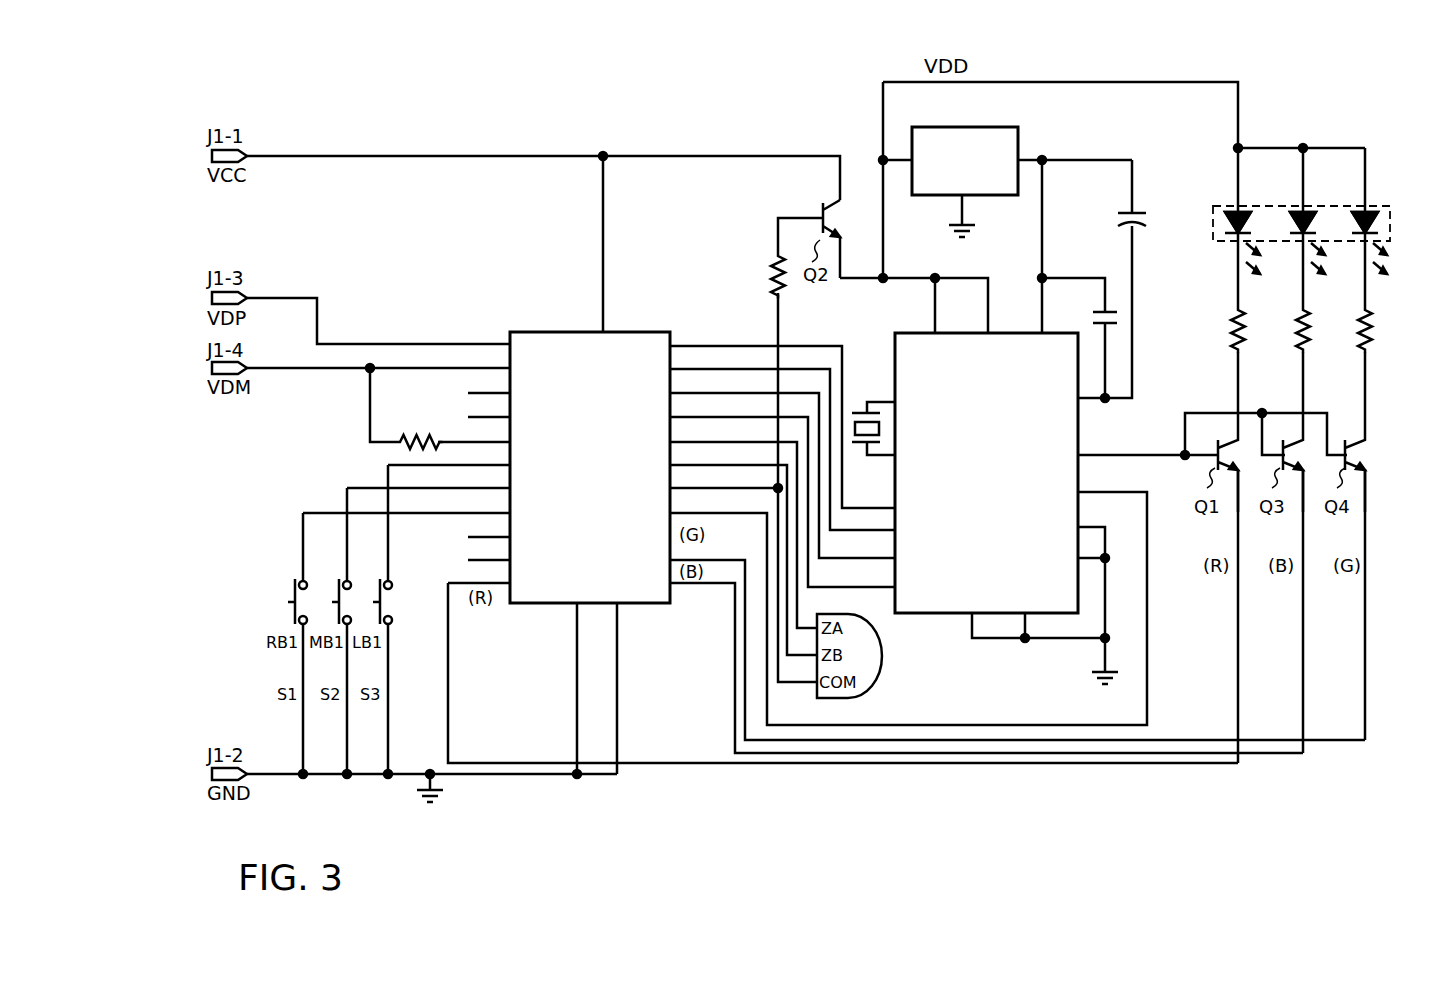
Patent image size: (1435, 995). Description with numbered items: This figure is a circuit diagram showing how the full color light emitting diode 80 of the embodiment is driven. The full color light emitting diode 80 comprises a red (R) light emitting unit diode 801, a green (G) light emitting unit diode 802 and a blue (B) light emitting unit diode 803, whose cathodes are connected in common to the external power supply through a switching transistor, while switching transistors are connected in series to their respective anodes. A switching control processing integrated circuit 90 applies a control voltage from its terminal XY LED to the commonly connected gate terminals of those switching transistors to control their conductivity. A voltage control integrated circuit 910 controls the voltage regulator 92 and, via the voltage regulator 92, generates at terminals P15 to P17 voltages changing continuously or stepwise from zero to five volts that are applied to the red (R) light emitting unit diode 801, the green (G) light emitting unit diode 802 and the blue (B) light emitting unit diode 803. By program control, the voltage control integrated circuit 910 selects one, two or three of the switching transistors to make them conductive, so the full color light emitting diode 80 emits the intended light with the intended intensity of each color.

The voltage control integrated circuit 910 is at (569, 330).
The voltage regulator 92 is at (1021, 131).
The switching control processing integrated circuit 90 is at (953, 617).
The full color light emitting diode 80 is at (1301, 330).
The red (R) light emitting unit diode 801 is at (1221, 210).
The green (G) light emitting unit diode 802 is at (1348, 210).
The blue (B) light emitting unit diode 803 is at (1286, 210).